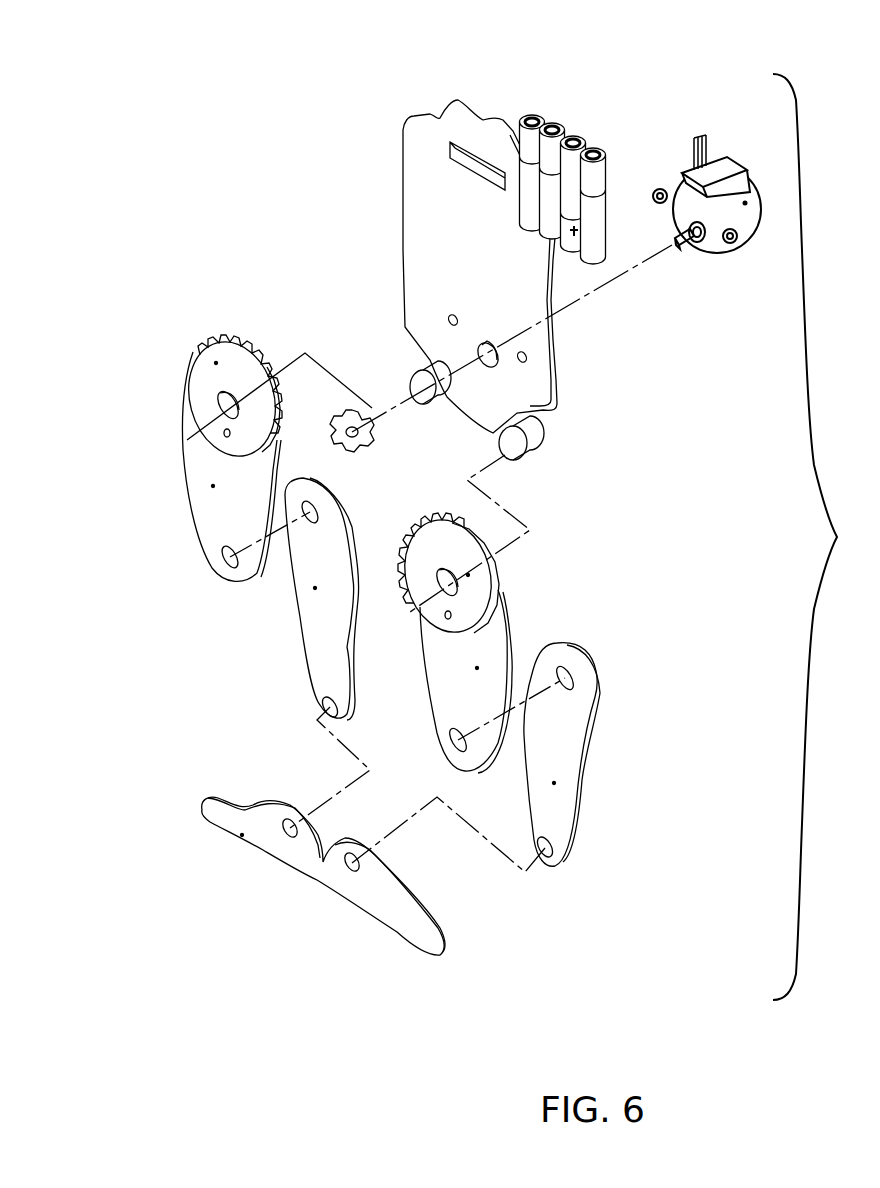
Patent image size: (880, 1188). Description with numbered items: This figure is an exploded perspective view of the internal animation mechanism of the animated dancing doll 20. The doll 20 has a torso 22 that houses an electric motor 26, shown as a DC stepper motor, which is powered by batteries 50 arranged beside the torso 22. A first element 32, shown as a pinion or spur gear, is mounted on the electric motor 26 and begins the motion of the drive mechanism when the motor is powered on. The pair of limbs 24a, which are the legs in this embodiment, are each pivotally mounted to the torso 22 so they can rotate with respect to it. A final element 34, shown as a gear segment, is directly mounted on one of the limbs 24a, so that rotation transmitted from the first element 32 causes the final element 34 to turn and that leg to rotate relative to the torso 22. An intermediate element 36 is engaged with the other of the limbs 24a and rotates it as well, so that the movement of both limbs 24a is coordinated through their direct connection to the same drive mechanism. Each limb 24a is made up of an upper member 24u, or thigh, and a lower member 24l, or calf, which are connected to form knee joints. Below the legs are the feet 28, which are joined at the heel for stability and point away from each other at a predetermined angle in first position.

The doll 20 is at (150, 113).
The torso 22 is at (398, 151).
The pair of limbs 24a is at (122, 405).
The upper member 24u is at (190, 505).
The lower member 24l is at (312, 630).
The electric motor 26 is at (688, 172).
The feet 28 is at (260, 842).
The first element 32 is at (343, 412).
The final element 34 is at (192, 364).
The intermediate element 36 is at (472, 600).
The batteries 50 is at (560, 86).